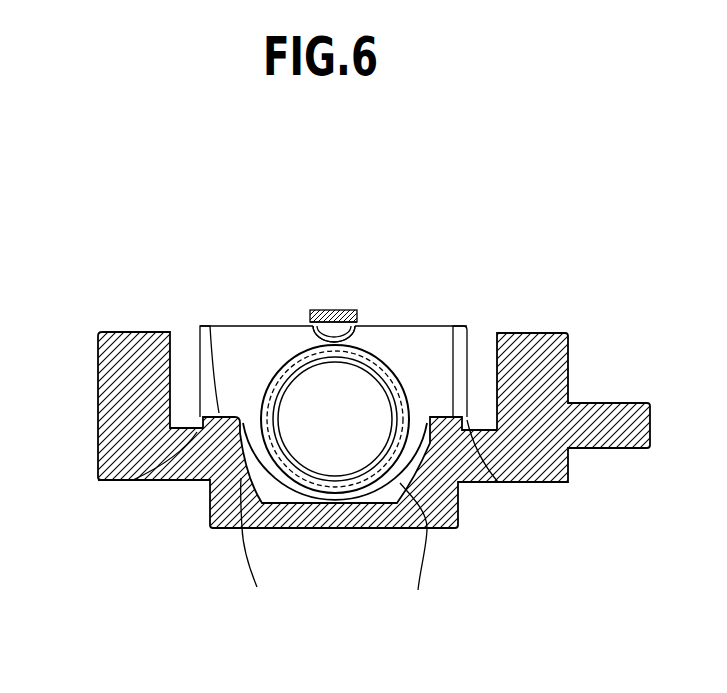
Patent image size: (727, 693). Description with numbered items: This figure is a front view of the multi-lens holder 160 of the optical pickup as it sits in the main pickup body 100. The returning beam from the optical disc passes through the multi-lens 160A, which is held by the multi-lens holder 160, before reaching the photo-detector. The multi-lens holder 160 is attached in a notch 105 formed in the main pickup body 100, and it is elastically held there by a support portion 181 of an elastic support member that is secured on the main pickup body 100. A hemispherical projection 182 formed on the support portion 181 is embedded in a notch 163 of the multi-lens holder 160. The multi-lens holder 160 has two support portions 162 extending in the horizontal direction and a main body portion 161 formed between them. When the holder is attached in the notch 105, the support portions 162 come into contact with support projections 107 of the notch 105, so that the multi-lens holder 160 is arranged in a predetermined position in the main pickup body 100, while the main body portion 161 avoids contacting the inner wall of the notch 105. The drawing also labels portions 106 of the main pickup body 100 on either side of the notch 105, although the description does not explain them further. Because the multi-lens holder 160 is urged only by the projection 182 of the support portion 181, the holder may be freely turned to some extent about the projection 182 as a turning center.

The main pickup body 100 is at (180, 523).
The notch 105 is at (183, 347).
The support portions 106 is at (338, 550).
The support projections 107 is at (210, 326).
The multi-lens holder 160 is at (468, 338).
The multi-lens 160A is at (294, 399).
The main body portion 161 is at (400, 477).
The support portions 162 is at (133, 480).
The notch 163 is at (358, 325).
The support portion 181 is at (342, 310).
The hemispherical projection 182 is at (302, 326).